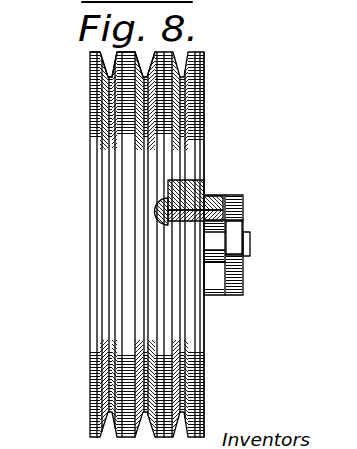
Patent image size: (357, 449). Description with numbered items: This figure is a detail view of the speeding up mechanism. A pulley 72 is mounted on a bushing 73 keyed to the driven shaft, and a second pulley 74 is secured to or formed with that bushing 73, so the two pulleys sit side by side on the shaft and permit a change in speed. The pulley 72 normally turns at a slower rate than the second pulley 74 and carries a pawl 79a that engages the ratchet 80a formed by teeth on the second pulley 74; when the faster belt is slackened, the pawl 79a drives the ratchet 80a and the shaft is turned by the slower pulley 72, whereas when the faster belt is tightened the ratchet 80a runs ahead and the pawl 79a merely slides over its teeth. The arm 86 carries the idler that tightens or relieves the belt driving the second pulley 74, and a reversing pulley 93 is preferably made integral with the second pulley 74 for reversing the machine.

The second pulley 74 is at (92, 176).
The arm 86 is at (176, 120).
The reversing pulley 93 is at (143, 60).
The pulley 72 is at (205, 127).
The bushing 73 is at (218, 196).
The pawl 79a is at (236, 232).
The ratchet 80a is at (244, 268).